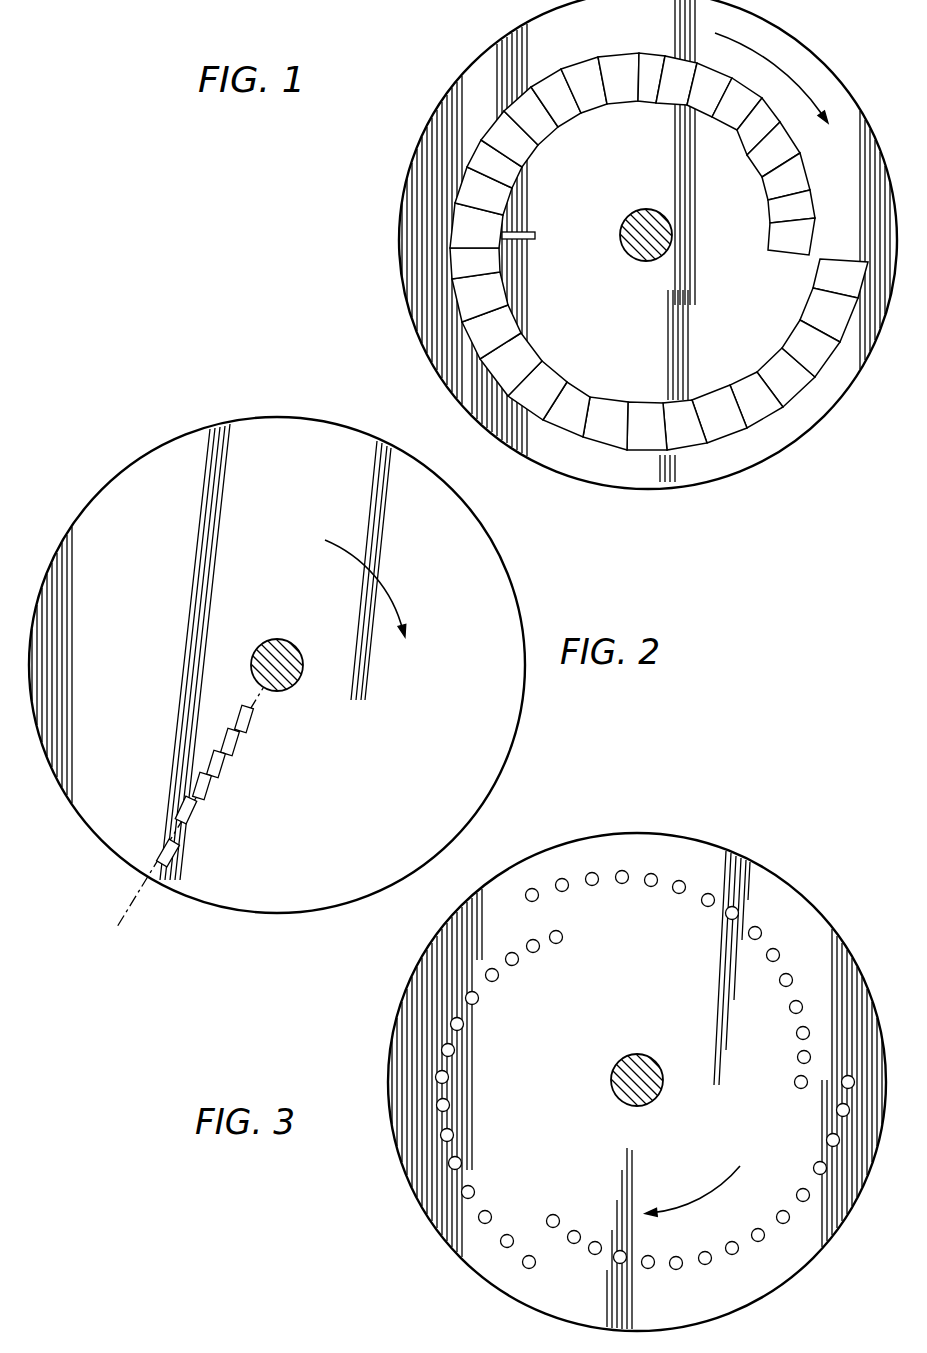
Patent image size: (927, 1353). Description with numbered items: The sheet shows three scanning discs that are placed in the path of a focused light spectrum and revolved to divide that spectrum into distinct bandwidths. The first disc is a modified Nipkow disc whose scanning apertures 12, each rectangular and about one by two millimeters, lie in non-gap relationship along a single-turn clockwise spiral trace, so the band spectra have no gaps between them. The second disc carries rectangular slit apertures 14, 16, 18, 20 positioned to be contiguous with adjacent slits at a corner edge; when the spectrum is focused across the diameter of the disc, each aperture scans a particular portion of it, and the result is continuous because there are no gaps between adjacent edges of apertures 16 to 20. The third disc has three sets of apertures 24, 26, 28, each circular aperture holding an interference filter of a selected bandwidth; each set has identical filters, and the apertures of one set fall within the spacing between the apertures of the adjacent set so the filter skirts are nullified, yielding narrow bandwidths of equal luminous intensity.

In FIG. 1, the scanning apertures 12 is at (812, 354).
In FIG. 2, the aperture 14 is at (191, 817).
In FIG. 2, the aperture 16 is at (206, 792).
In FIG. 2, the aperture 18 is at (221, 768).
In FIG. 2, the aperture 20 is at (235, 746).
In FIG. 3, the set of apertures 24 is at (499, 1100).
In FIG. 3, the set of apertures 26 is at (668, 980).
In FIG. 3, the set of apertures 28 is at (701, 1173).